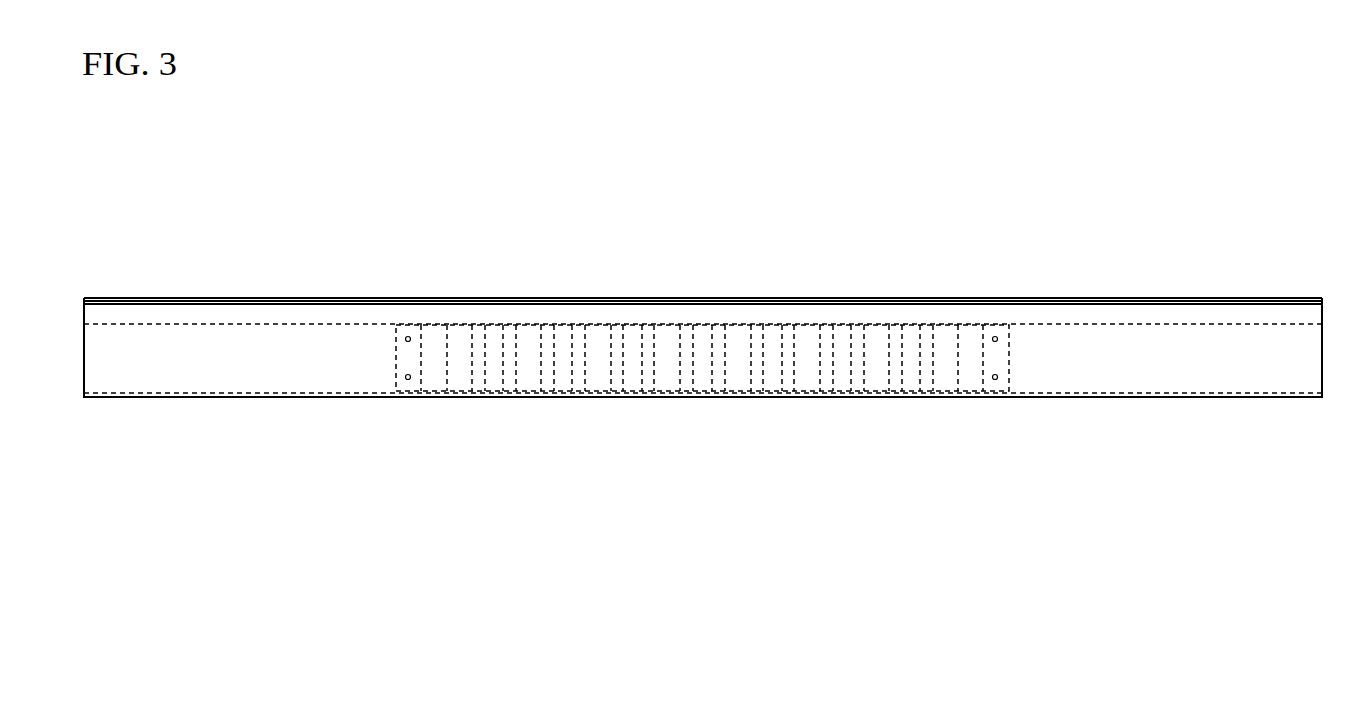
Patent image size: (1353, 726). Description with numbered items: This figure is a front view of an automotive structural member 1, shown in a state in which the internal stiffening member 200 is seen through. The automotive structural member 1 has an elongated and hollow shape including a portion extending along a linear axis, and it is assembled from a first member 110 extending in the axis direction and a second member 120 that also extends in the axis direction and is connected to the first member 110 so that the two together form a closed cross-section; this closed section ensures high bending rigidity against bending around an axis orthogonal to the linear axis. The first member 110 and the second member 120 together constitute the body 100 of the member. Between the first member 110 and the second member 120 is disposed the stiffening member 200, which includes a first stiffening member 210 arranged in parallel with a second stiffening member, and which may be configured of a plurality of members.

The automotive structural member 1 is at (320, 275).
The display panel 100 is at (1303, 215).
The first member 110 is at (1190, 297).
The second member 120 is at (1265, 335).
The stiffening member 200 is at (702, 358).
The first stiffening member 210 is at (702, 387).